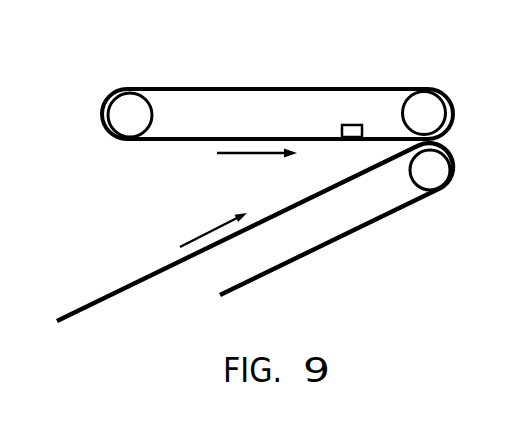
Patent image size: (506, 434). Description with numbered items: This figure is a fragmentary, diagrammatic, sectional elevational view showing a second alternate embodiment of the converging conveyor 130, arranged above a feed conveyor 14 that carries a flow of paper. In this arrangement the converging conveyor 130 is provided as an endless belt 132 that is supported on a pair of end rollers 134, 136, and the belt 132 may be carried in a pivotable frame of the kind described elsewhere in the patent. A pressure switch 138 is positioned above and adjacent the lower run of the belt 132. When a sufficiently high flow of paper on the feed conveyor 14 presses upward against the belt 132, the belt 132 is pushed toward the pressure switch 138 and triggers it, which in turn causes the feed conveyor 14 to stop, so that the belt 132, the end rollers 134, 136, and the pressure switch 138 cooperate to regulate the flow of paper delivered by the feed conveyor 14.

The feed conveyor 14 is at (362, 233).
The converging conveyor 130 is at (328, 80).
The endless belt 132 is at (230, 89).
The end roller 134 is at (433, 105).
The end roller 136 is at (122, 108).
The pressure switch 138 is at (342, 125).